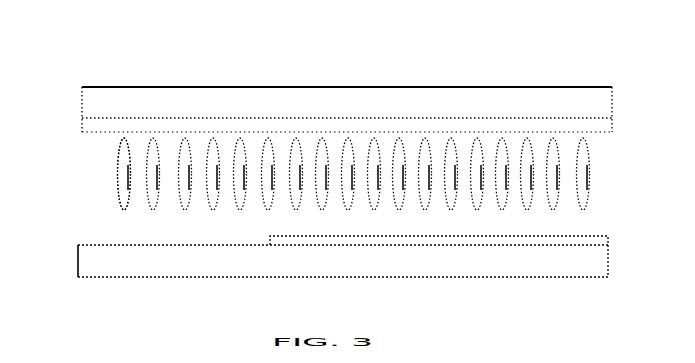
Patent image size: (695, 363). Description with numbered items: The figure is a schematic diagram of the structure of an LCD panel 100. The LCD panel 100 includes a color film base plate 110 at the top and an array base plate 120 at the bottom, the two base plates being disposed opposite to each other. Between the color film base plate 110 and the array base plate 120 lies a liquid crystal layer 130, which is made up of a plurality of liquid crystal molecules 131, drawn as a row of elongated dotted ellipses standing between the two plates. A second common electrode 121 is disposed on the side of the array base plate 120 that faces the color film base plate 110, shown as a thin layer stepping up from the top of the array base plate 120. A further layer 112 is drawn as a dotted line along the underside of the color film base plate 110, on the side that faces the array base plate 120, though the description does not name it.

The LCD panel 100 is at (89, 63).
The color film base plate 110 is at (90, 110).
The alignment layer 112 is at (84, 124).
The array base plate 120 is at (85, 263).
The second common electrode 121 is at (270, 236).
The liquid crystal layer 130 is at (100, 180).
The liquid crystal molecules 131 is at (118, 160).